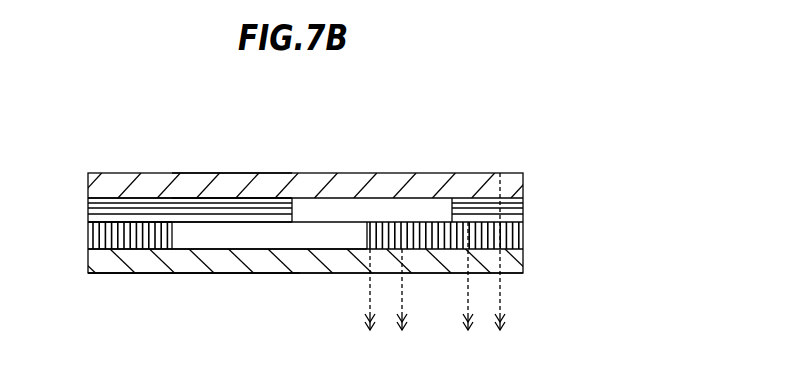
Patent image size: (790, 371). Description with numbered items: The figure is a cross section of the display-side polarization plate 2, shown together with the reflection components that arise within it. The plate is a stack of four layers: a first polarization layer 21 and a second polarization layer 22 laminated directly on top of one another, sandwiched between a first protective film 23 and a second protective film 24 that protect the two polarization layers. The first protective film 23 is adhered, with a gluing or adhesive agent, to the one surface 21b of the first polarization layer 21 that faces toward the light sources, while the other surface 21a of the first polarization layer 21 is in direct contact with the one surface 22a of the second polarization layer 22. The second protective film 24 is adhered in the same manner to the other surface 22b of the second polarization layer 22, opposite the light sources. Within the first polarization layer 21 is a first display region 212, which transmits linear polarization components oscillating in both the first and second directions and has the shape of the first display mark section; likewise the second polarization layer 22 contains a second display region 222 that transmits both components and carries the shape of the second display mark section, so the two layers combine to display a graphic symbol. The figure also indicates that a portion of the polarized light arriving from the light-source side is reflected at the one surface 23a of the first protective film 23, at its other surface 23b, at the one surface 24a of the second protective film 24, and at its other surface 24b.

The display-side polarization plate 2 is at (351, 224).
The first polarization layer 21 is at (517, 232).
The another surface of the first polarization layer 21a is at (103, 197).
The one surface of the first polarization layer 21b is at (117, 227).
The second polarization layer 22 is at (517, 216).
The one surface of the second polarization layer 22a is at (160, 244).
The another surface of the second polarization layer 22b is at (158, 220).
The first protective film 23 is at (332, 264).
The one surface of the first protective film 23a is at (206, 271).
The another surface of the first protective film 23b is at (251, 246).
The second protective film 24 is at (516, 194).
The one surface of the second protective film 24a is at (192, 202).
The another surface of the second protective film 24b is at (238, 198).
The first display region 212 is at (261, 240).
The second display region 222 is at (376, 210).